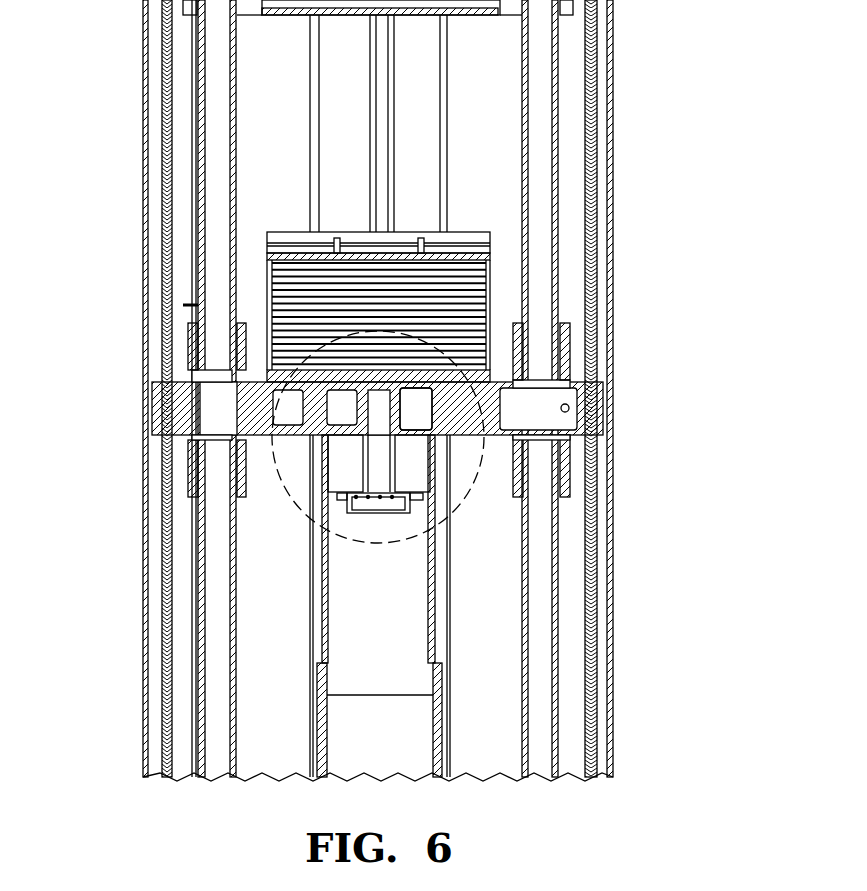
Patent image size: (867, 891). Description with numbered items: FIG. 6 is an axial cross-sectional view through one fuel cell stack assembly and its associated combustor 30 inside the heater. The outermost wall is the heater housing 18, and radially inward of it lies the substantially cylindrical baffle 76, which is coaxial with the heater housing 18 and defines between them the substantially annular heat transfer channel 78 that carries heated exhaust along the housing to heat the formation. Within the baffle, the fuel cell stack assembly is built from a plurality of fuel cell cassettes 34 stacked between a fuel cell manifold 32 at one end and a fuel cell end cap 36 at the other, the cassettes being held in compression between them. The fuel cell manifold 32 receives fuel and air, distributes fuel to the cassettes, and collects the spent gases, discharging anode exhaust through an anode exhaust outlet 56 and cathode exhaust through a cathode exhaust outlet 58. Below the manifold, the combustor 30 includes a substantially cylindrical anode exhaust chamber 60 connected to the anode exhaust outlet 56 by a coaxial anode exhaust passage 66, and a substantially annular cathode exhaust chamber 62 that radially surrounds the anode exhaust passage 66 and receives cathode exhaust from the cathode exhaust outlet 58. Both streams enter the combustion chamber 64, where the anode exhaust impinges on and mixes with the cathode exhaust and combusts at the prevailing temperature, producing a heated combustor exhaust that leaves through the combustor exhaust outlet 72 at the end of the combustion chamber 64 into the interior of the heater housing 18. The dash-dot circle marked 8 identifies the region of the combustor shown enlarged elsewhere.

The heater housing 18 is at (147, 78).
The baffle 76 is at (602, 68).
The fuel cell end cap 36 is at (466, 232).
The fuel cell cassettes 34 is at (267, 273).
The anode exhaust outlet 56 is at (373, 397).
The fuel cell manifold 32 is at (255, 405).
The cathode exhaust outlet 58 is at (417, 420).
The detail circle 8 is at (477, 373).
The combustor 30 is at (302, 484).
The combustion chamber 64 is at (342, 574).
The anode exhaust passage 66 is at (380, 443).
The cathode exhaust chamber 62 is at (422, 473).
The anode exhaust chamber 60 is at (390, 503).
The heat transfer channel 78 is at (155, 682).
The combustor exhaust outlet 72 is at (410, 695).